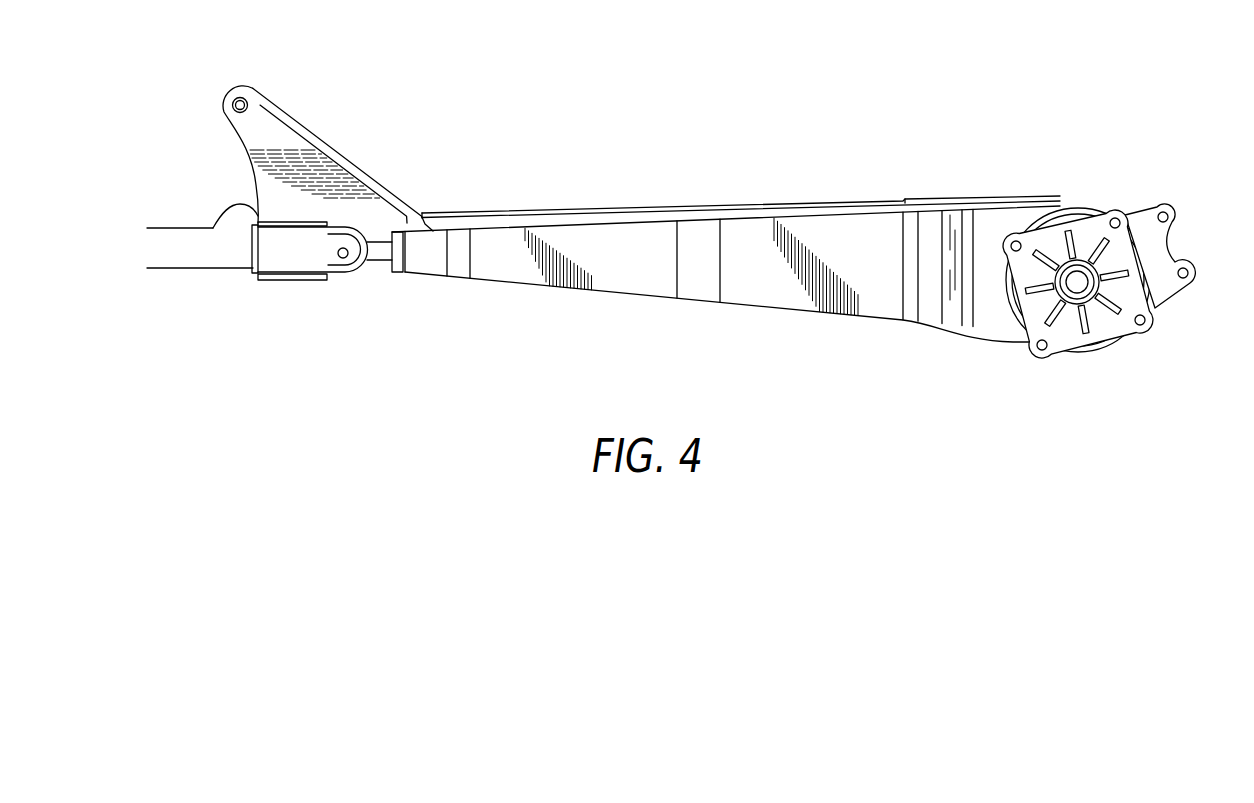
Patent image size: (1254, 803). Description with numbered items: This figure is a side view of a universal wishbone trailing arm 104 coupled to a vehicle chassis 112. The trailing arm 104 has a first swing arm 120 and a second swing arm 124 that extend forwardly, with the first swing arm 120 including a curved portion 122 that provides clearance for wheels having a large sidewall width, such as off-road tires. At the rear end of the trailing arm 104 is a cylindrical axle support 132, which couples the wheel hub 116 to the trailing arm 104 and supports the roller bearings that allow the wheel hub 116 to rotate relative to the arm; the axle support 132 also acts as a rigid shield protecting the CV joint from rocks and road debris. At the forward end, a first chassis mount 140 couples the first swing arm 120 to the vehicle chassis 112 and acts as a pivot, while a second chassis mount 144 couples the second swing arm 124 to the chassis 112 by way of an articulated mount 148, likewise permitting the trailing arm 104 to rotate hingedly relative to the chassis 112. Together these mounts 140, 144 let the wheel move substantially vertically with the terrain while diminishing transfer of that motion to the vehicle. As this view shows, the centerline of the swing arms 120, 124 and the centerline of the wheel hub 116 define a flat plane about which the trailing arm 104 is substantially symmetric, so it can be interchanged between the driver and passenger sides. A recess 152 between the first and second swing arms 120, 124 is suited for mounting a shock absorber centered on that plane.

The universal wishbone trailing arm 104 is at (1135, 103).
The vehicle chassis 112 is at (183, 258).
The wheel hub 116 is at (1052, 358).
The first swing arm 120 is at (633, 273).
The curved portion 122 is at (700, 283).
The second swing arm 124 is at (558, 212).
The cylindrical axle support 132 is at (1093, 205).
The first chassis mount 140 is at (370, 265).
The second chassis mount 144 is at (420, 212).
The articulated mount 148 is at (313, 168).
The recess 152 is at (785, 204).